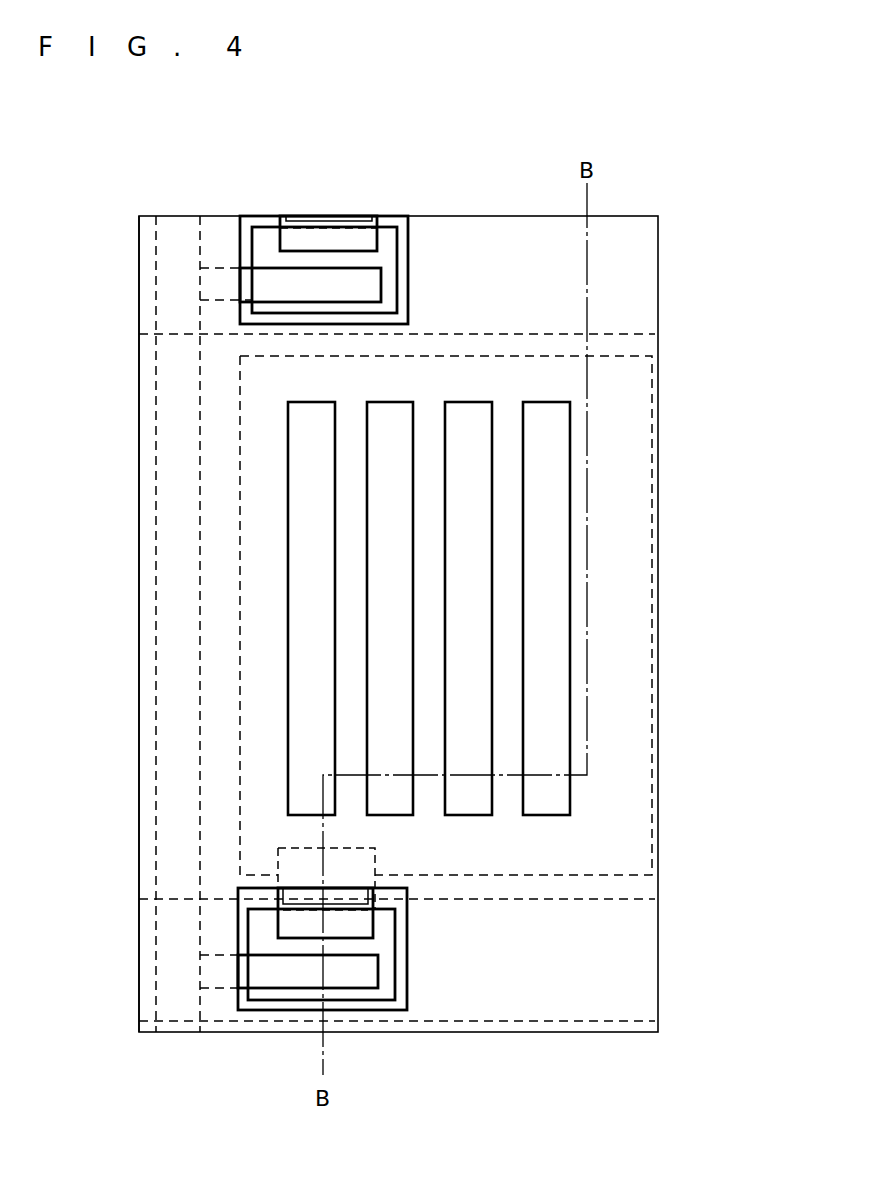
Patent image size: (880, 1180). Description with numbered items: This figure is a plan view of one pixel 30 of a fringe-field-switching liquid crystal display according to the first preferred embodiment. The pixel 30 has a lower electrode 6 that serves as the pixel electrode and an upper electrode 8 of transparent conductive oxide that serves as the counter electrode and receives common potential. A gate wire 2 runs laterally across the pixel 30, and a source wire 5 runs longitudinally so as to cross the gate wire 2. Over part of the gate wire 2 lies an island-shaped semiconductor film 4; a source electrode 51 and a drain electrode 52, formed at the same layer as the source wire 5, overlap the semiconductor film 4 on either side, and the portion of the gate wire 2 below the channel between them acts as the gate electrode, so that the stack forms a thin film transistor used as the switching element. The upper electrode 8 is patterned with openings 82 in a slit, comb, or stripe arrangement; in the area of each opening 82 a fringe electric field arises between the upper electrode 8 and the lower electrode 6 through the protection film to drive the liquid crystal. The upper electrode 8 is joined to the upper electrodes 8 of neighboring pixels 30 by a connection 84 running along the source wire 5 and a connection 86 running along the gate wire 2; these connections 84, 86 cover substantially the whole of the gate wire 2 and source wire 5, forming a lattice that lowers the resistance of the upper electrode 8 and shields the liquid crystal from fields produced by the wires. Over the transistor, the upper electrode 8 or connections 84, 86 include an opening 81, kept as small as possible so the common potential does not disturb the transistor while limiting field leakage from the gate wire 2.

The gate wire 2 is at (625, 335).
The pixel 30 is at (684, 441).
The semiconductor film 4 is at (262, 932).
The source wire 5 is at (156, 500).
The lower electrode 6 is at (239, 763).
The upper electrode 8 is at (509, 608).
The opening 82 is at (478, 673).
The connection 86 is at (146, 646).
The source electrode 51 is at (290, 972).
The drain electrode 52 is at (352, 928).
The opening 81 is at (407, 1010).
The connection 84 is at (518, 1012).